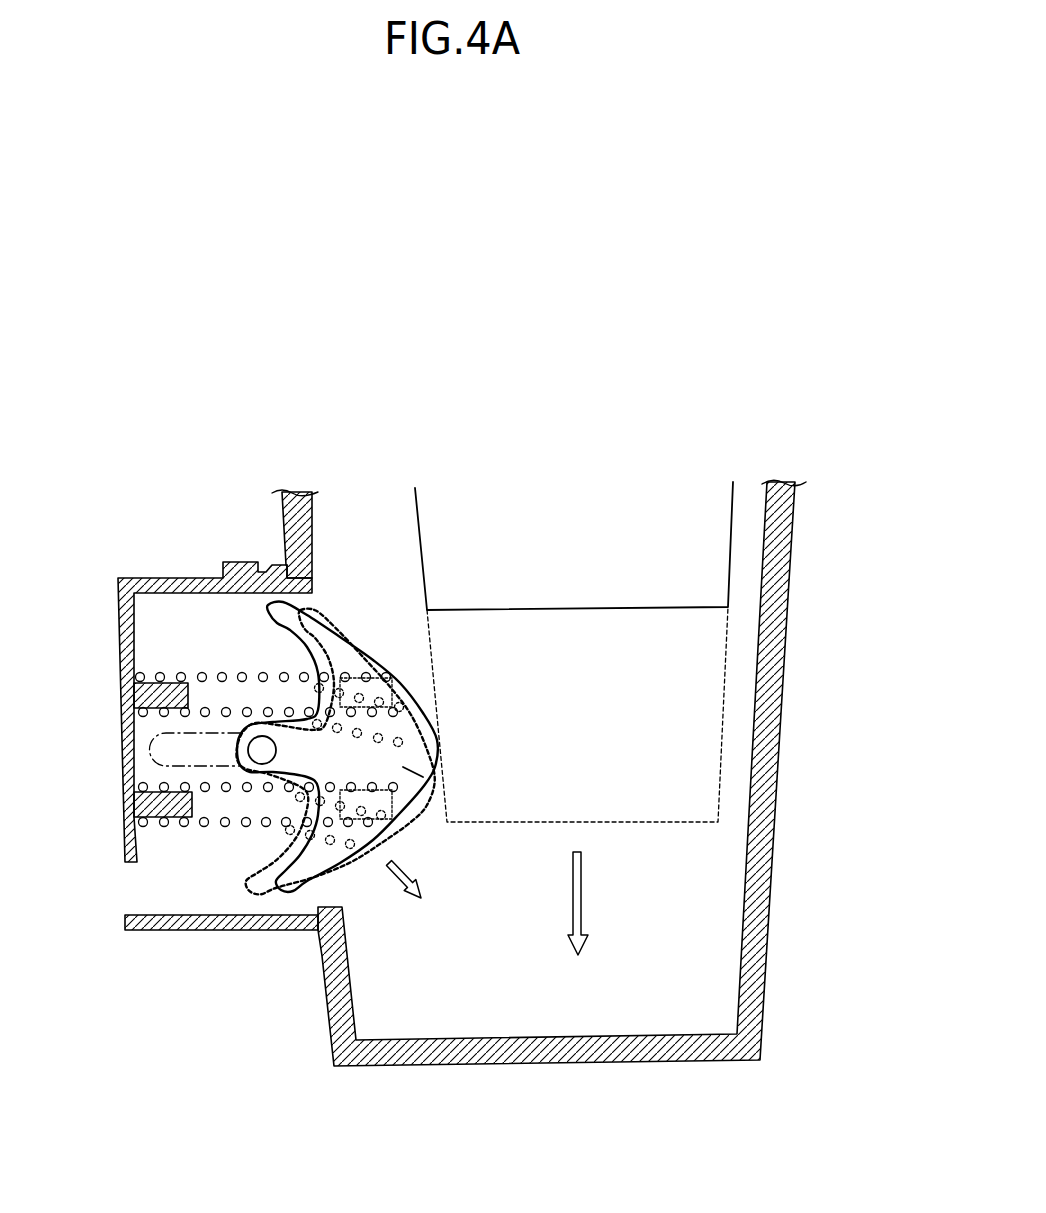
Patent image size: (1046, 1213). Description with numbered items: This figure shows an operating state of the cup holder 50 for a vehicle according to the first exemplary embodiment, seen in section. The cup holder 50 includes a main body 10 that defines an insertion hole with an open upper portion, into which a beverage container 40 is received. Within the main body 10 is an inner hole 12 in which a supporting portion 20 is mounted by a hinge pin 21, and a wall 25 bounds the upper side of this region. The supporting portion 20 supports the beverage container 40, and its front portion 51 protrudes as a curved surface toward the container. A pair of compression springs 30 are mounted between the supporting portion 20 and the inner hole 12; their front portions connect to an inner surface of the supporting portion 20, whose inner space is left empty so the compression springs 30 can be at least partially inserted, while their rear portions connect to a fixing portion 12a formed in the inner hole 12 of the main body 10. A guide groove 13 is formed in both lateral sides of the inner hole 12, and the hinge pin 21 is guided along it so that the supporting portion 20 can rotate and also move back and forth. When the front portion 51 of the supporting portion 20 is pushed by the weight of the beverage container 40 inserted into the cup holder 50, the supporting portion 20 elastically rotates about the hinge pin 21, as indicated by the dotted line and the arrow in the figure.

The main body 10 is at (780, 700).
The inner hole 12 is at (168, 888).
The fixing portion 12a is at (138, 803).
The guide groove 13 is at (160, 828).
The supporting portion 20 is at (397, 663).
The hinge pin 21 is at (262, 752).
The partition wall 25 is at (312, 566).
The compression springs 30 is at (178, 680).
The beverage container 40 is at (490, 608).
The cup holder 50 is at (832, 446).
The front portion 51 is at (430, 775).